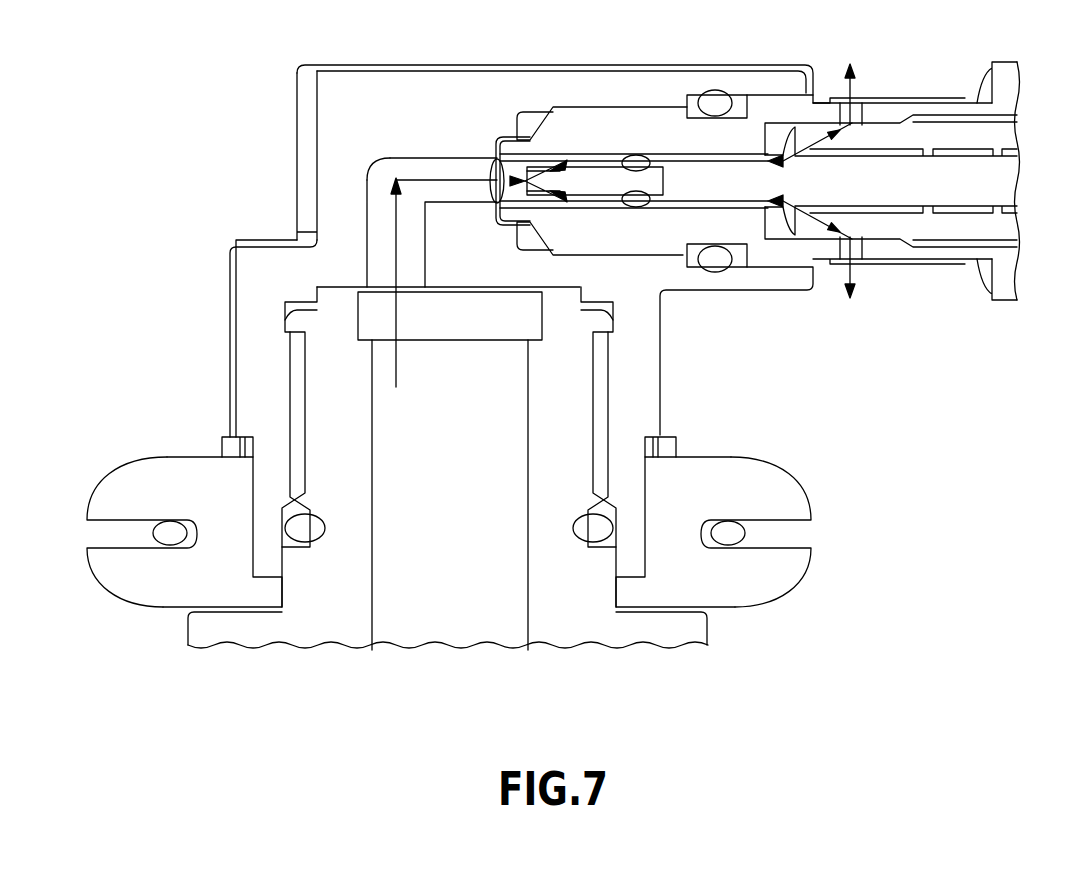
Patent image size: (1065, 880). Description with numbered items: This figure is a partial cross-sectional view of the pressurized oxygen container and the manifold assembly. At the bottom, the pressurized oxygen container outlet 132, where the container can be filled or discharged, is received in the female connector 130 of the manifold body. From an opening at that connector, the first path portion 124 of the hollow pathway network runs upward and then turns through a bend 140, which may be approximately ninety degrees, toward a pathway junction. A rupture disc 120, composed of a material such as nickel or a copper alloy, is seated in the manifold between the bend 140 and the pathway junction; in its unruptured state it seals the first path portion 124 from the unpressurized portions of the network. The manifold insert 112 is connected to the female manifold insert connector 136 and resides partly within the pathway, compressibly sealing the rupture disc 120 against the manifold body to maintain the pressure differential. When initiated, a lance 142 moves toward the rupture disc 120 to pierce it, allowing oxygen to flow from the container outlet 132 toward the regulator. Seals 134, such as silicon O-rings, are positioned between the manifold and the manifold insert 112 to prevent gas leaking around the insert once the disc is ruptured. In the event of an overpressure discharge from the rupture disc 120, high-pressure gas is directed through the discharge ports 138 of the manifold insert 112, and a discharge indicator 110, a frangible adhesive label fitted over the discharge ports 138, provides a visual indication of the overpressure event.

The discharge indicator 110 is at (893, 97).
The manifold insert 112 is at (653, 130).
The rupture disc 120 is at (500, 157).
The first path portion 124 is at (427, 168).
The female connector 130 is at (638, 390).
The pressurized oxygen container outlet 132 is at (348, 622).
The seal 134 is at (715, 100).
The female manifold insert connector 136 is at (750, 80).
The discharge port 138 is at (848, 110).
The bend 140 is at (382, 170).
The lance 142 is at (600, 177).